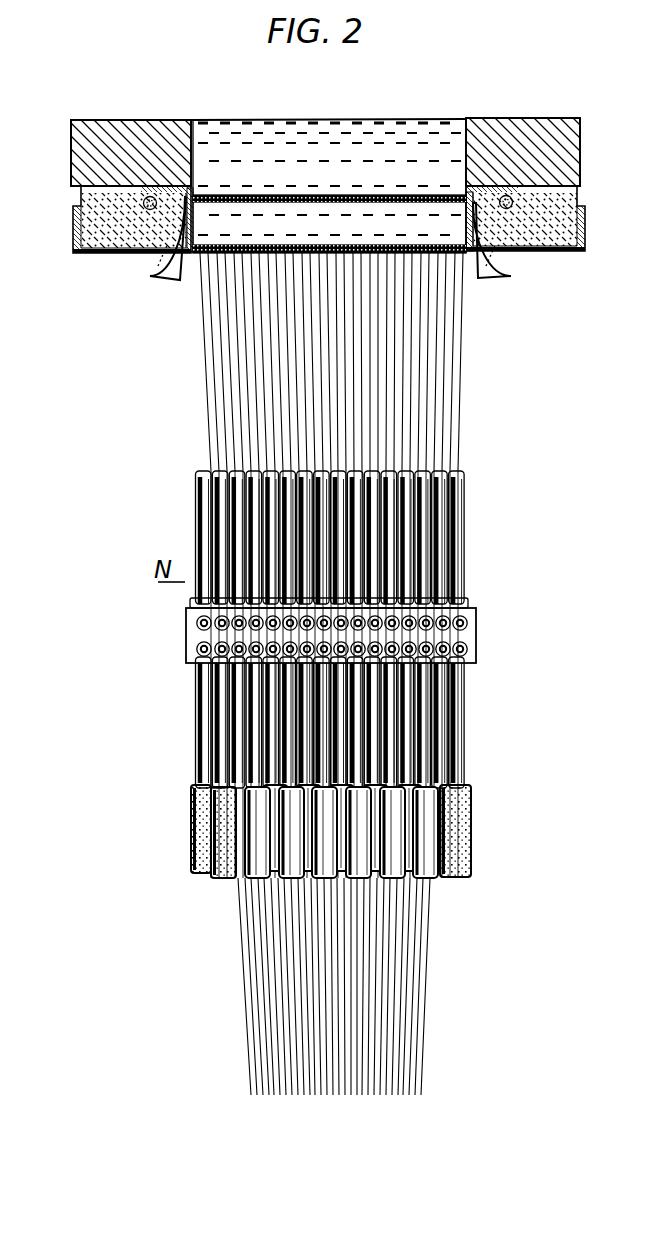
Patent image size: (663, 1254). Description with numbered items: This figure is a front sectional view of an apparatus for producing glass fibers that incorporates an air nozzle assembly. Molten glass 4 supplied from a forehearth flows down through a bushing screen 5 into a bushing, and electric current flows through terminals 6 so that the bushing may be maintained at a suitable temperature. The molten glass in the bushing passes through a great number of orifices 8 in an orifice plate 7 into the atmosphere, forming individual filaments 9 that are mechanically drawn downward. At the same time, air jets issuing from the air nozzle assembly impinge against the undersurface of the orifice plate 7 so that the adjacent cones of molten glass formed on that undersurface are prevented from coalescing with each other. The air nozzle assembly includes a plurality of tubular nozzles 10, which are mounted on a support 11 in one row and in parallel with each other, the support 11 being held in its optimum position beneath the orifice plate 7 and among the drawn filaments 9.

The molten glass 4 is at (417, 112).
The bushing screen 5 is at (430, 186).
The terminals 6 is at (499, 266).
The orifice plate 7 is at (458, 249).
The orifices 8 is at (190, 249).
The filaments 9 is at (201, 336).
The tubular nozzles 10 is at (453, 500).
The support 11 is at (468, 612).